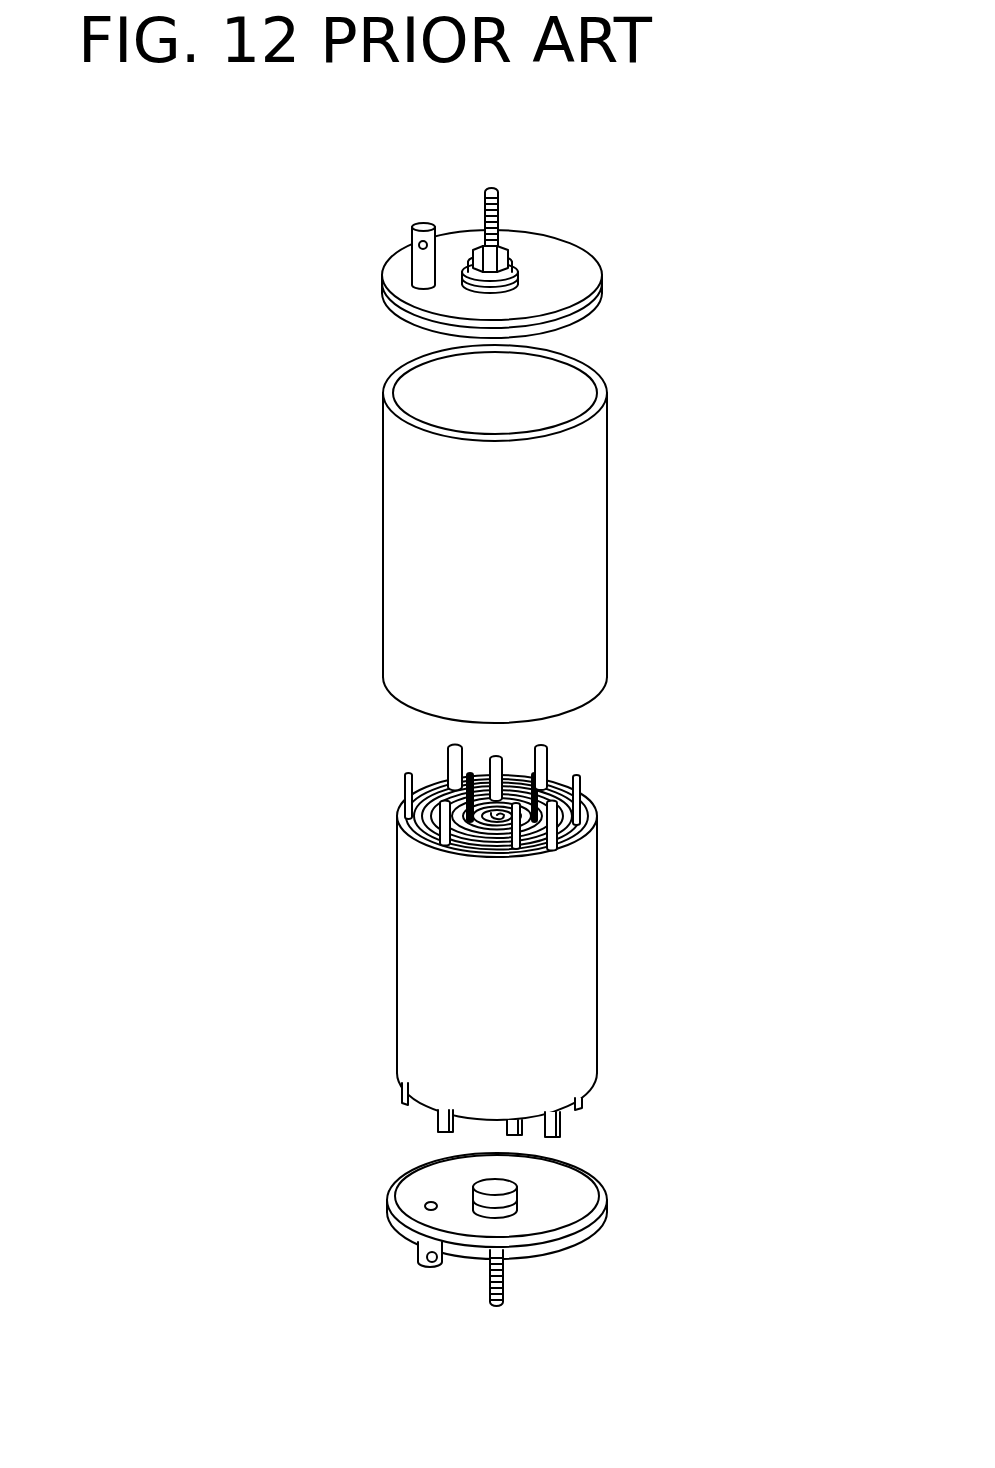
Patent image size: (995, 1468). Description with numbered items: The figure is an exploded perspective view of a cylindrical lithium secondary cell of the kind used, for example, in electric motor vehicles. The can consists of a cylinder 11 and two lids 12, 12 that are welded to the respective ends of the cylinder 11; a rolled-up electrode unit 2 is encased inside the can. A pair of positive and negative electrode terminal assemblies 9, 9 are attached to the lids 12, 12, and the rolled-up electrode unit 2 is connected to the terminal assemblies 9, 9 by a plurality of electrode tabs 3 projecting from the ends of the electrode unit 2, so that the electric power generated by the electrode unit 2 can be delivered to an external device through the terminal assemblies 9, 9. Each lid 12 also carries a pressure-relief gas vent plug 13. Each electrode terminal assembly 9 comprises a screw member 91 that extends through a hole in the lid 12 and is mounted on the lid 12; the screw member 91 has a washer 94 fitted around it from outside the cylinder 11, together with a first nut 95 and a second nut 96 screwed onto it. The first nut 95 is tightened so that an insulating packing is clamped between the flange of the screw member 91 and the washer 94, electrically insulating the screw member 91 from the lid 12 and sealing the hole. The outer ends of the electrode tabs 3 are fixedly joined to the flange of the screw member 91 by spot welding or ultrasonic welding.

The electrode terminal assembly 9 is at (552, 705).
The screw member 91 is at (491, 190).
The washer 94 is at (467, 268).
The first nut 95 is at (518, 268).
The second nut 96 is at (500, 252).
The lid 12 is at (578, 275).
The pressure-relief gas vent plug 13 is at (410, 235).
The cylinder 11 is at (593, 548).
The rolled-up electrode unit 2 is at (583, 980).
The electrode tabs 3 is at (447, 758).